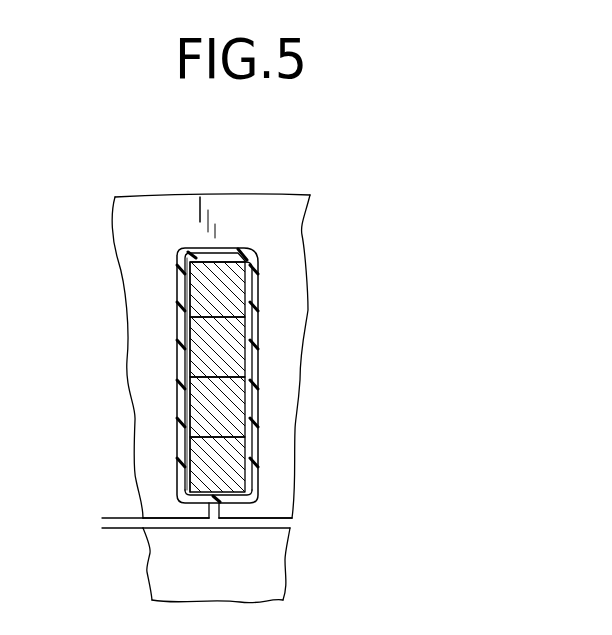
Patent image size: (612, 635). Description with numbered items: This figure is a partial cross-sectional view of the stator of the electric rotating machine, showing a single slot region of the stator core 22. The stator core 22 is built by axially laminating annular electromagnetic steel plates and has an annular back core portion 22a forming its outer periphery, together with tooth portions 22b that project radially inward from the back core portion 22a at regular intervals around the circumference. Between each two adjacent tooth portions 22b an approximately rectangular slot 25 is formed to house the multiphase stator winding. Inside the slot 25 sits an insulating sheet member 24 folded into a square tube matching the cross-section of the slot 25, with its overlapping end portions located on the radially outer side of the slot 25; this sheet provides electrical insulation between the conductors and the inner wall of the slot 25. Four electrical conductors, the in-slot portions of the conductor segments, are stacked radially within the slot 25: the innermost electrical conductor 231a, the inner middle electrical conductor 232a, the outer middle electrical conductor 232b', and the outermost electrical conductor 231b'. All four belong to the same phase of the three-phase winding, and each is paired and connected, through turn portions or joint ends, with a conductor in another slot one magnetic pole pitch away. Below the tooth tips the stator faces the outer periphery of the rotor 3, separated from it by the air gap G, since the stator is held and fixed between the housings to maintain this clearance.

The stator core 22 is at (158, 195).
The back core portion 22a is at (257, 207).
The tooth portions 22b is at (150, 452).
The insulating sheet member 24 is at (256, 260).
The slot 25 is at (188, 293).
The outermost electrical conductor 231b' is at (297, 289).
The outer middle electrical conductor 232b' is at (296, 347).
The inner middle electrical conductor 232a is at (225, 400).
The innermost electrical conductor 231a is at (225, 465).
The rotor 3 is at (147, 572).
The air gap G is at (114, 492).